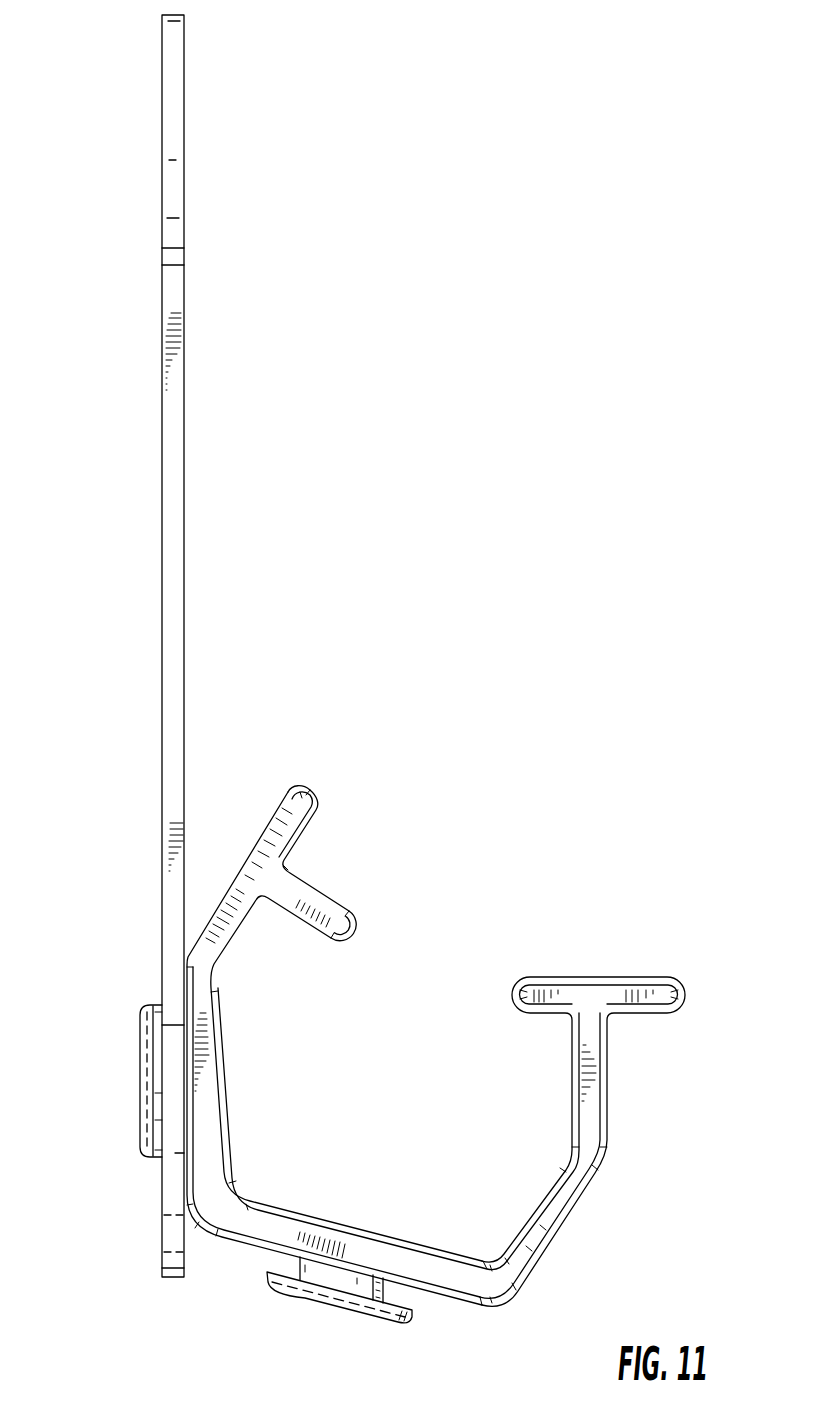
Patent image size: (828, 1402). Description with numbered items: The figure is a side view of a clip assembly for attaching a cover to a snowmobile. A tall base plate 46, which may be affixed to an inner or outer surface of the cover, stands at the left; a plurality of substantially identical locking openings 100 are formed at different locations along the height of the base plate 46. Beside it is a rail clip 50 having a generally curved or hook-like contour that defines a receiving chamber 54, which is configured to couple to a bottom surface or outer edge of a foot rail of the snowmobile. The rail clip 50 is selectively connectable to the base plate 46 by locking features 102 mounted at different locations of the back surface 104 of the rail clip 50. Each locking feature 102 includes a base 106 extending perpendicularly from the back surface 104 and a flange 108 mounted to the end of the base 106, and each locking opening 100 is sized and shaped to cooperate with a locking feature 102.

The base plate 46 is at (162, 316).
The rail clip 50 is at (498, 1283).
The receiving chamber 54 is at (395, 1073).
The locking opening 100 is at (362, 1086).
The locking feature 102 is at (269, 1195).
The back surface 104 is at (403, 1065).
The base 106 is at (373, 1296).
The flange 108 is at (163, 1072).